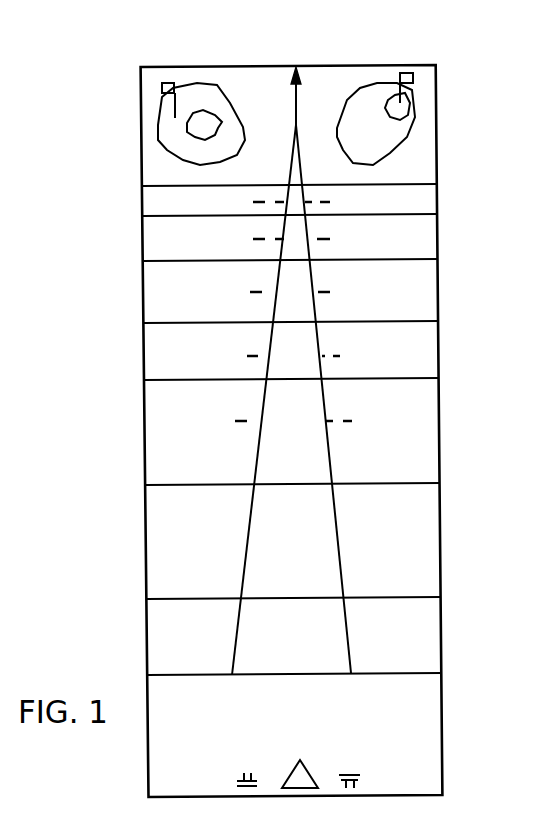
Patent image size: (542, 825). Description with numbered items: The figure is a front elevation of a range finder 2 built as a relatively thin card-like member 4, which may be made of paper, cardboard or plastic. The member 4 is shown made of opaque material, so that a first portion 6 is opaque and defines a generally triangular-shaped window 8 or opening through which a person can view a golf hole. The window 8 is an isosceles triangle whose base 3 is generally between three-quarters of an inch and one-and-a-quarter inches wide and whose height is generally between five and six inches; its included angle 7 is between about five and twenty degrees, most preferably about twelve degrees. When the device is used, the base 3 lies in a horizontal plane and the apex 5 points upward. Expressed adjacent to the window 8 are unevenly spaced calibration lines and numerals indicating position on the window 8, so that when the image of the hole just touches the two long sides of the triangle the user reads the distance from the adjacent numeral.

The range finder 2 is at (90, 510).
The base 3 is at (294, 656).
The card-like member 4 is at (202, 738).
The apex 5 is at (314, 96).
The first portion 6 is at (321, 419).
The included angle 7 is at (275, 400).
The window 8 is at (317, 399).